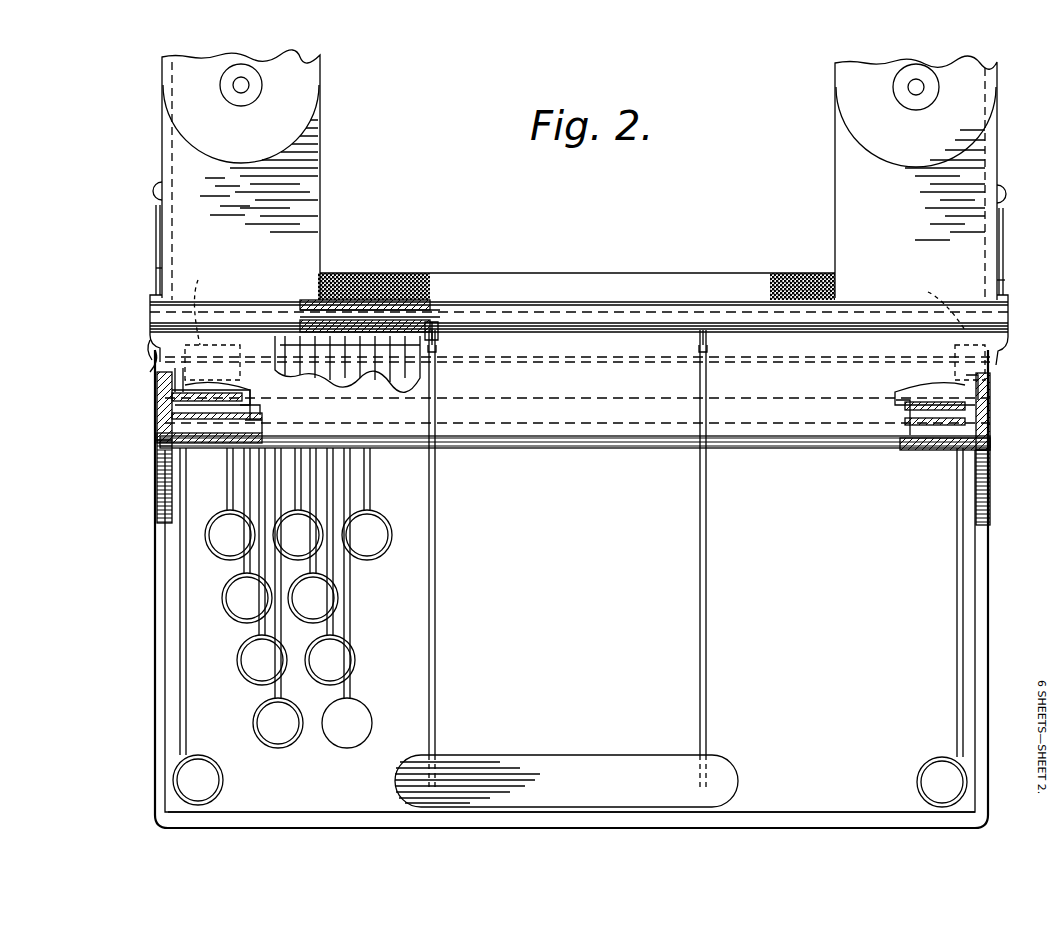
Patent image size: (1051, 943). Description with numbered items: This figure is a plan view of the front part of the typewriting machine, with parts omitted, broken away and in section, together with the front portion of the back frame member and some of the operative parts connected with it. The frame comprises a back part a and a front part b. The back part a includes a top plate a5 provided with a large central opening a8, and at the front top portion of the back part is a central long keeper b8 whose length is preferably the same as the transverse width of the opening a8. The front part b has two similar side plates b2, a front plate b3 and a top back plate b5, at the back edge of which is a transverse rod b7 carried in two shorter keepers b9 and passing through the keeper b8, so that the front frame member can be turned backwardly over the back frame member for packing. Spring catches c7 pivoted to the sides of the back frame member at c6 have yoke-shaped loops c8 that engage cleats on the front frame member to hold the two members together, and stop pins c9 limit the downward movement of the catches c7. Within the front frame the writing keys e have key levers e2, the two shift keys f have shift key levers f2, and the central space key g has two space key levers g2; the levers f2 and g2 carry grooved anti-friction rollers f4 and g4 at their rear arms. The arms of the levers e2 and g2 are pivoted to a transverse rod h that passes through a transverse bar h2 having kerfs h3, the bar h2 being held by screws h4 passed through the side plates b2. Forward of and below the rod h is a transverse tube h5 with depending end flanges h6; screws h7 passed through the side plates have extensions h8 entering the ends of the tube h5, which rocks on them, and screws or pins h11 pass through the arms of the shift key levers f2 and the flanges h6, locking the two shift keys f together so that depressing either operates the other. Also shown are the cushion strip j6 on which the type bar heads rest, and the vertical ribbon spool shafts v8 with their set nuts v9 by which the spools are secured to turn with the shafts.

The back part of the frame a is at (162, 128).
The top plate a5 is at (241, 158).
The central opening a8 is at (449, 245).
The shaft v8 is at (241, 93).
The set nut v9 is at (262, 88).
The pivot of spring catch c6 is at (155, 190).
The spring catch c7 is at (158, 228).
The yoke-shaped loop c8 is at (150, 302).
The stop pin c9 is at (156, 278).
The anti-friction roller f4 is at (576, 299).
The keeper b9 is at (262, 312).
The transverse bar h2 is at (360, 332).
The transverse rod b7 is at (398, 318).
The kerf h3 is at (430, 335).
The long keeper b8 is at (615, 318).
The cushion strip j6 is at (802, 285).
The screw h4 is at (155, 348).
The depending end flange h6 is at (968, 378).
The anti-friction roller g4 is at (745, 372).
The screw or pin h11 is at (958, 398).
The transverse rod h is at (385, 368).
The top back plate b5 is at (577, 390).
The screw h7 is at (157, 406).
The extension h8 is at (205, 432).
The transverse tube h5 is at (237, 440).
The side plate b2 is at (155, 625).
The front plate b3 is at (828, 812).
The front part of the frame b is at (575, 460).
The key lever e2 is at (315, 497).
The writing key e is at (335, 598).
The shift key lever f2 is at (186, 692).
The shift key f is at (225, 782).
The space key lever g2 is at (436, 688).
The space key g is at (566, 781).